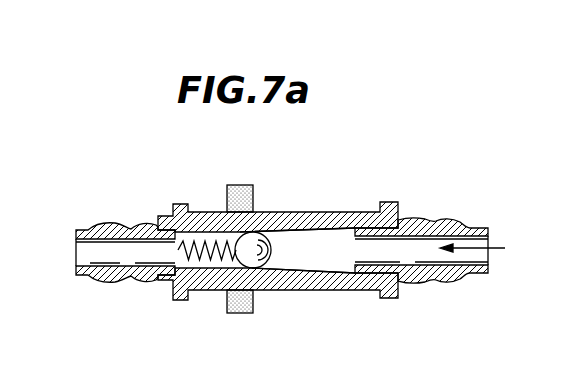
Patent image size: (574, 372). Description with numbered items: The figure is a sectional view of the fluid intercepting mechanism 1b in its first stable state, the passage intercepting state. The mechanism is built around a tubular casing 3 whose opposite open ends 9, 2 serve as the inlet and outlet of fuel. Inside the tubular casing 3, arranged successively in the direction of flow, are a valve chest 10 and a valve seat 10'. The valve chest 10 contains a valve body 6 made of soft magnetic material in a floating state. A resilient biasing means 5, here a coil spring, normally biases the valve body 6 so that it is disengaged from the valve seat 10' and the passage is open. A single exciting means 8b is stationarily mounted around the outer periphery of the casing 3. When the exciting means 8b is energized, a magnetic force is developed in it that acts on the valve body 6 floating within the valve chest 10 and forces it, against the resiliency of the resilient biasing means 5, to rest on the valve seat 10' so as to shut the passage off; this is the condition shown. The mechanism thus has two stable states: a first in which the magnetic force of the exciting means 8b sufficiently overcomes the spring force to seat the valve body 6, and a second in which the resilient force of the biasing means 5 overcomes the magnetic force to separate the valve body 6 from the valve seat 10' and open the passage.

The fluid intercepting mechanism 1b is at (290, 202).
The open end 2 is at (107, 222).
The tubular casing 3 is at (200, 210).
The resilient biasing means 5 is at (165, 283).
The valve body 6 is at (277, 264).
The exciting means 8b is at (227, 185).
The open end 9 is at (462, 220).
The valve chest 10 is at (301, 196).
The valve seat 10' is at (259, 312).